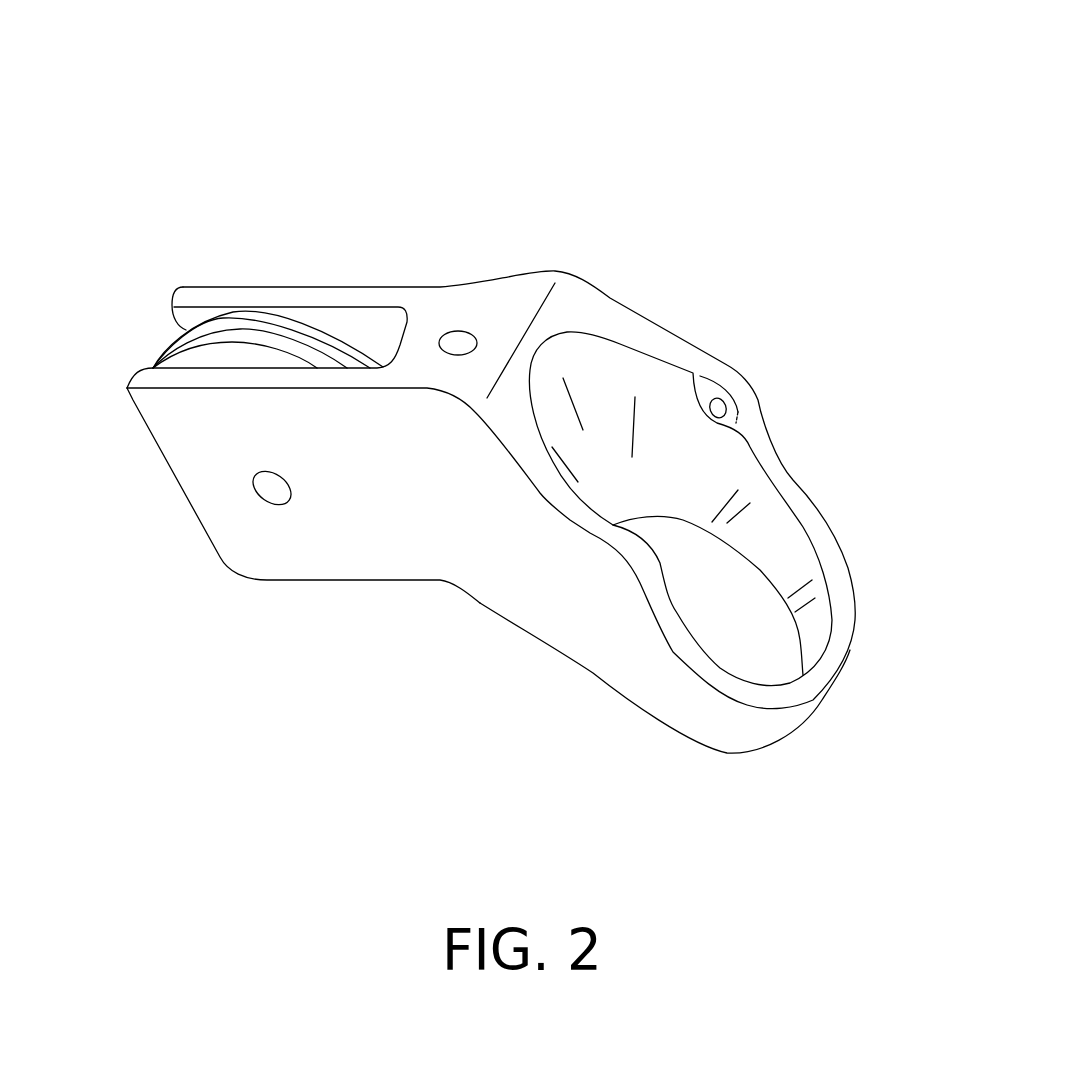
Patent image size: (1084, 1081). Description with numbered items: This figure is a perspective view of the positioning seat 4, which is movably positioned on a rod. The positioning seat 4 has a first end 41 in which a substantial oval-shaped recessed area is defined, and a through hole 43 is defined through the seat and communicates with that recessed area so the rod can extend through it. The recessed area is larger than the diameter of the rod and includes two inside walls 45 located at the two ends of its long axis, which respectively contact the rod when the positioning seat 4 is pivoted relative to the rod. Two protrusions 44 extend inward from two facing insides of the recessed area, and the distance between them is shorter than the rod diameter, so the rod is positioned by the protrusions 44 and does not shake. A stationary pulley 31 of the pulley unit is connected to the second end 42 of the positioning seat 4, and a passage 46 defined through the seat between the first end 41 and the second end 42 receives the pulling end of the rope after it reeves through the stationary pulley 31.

The positioning seat 4 is at (650, 165).
The stationary pulley 31 is at (190, 333).
The first end 41 is at (675, 702).
The second end 42 is at (260, 555).
The through hole 43 is at (752, 620).
The protrusions 44 is at (722, 407).
The inside walls 45 is at (546, 387).
The passage 46 is at (462, 342).